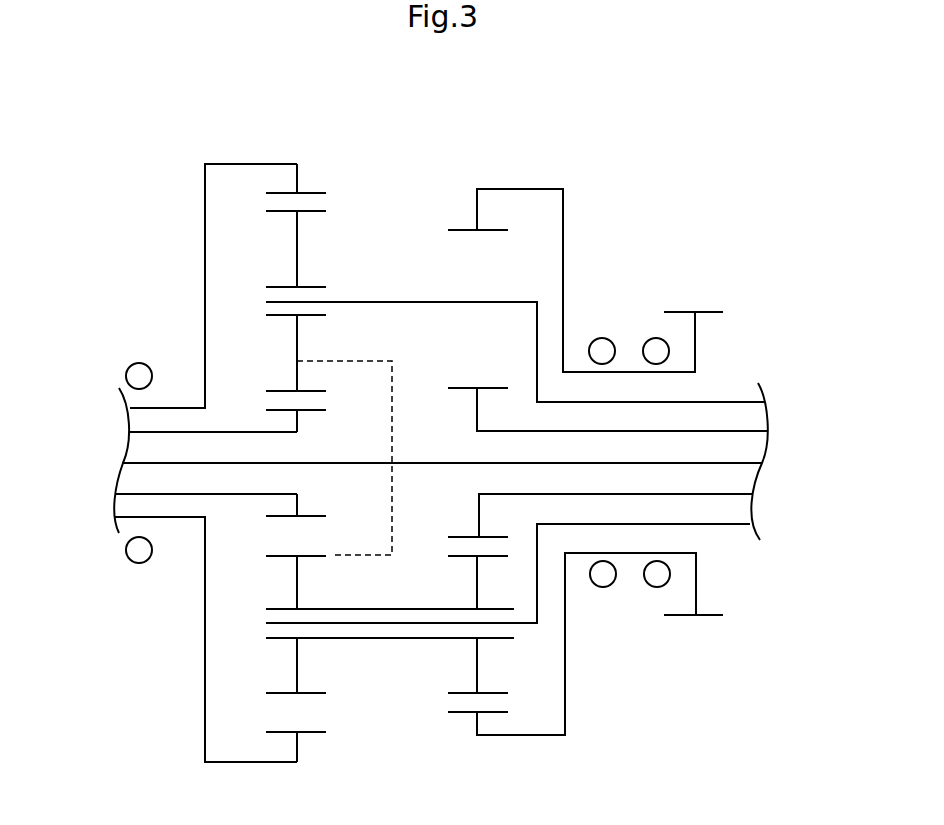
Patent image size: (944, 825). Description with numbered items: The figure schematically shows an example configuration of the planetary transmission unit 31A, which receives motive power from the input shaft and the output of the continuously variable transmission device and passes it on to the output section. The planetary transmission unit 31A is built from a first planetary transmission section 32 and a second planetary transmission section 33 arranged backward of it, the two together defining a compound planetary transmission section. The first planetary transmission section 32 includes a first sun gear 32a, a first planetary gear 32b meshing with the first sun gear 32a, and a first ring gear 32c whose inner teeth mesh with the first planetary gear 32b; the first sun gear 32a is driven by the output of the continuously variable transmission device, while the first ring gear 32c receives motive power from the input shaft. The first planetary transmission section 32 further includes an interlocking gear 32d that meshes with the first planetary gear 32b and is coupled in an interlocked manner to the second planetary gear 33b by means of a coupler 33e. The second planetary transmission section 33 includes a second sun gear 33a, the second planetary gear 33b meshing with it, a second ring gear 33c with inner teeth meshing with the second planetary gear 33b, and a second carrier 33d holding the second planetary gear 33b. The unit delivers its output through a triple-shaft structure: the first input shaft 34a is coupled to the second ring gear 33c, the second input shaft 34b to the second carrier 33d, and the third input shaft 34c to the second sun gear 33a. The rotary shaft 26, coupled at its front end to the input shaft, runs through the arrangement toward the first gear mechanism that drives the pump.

The planetary transmission unit 31A is at (422, 125).
The first planetary transmission section 32 is at (148, 157).
The first sun gear 32a is at (298, 420).
The first planetary gear 32b is at (299, 332).
The first ring gear 32c is at (297, 180).
The interlocking gear 32d is at (299, 665).
The second planetary transmission section 33 is at (563, 160).
The second sun gear 33a is at (478, 527).
The second planetary gear 33b is at (477, 590).
The second ring gear 33c is at (479, 723).
The second carrier 33d is at (418, 302).
The coupler 33e is at (398, 640).
The first input shaft 34a is at (628, 372).
The second input shaft 34b is at (720, 525).
The third input shaft 34c is at (754, 431).
The rotary shaft 26 is at (708, 462).